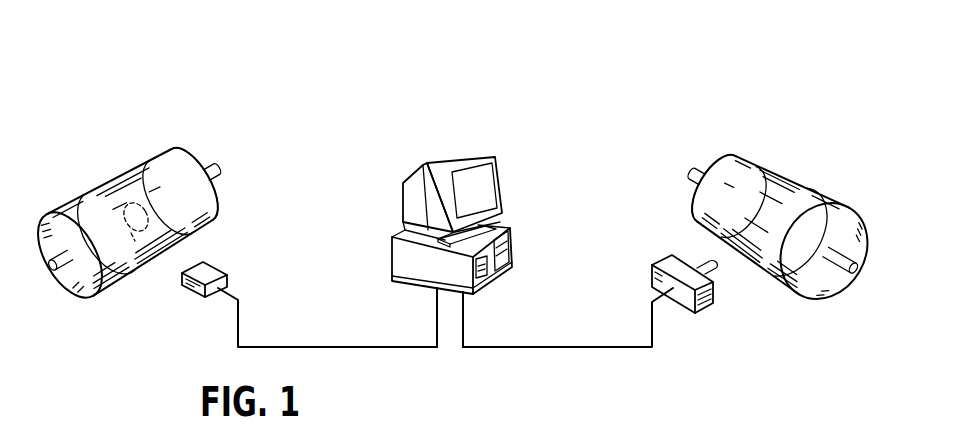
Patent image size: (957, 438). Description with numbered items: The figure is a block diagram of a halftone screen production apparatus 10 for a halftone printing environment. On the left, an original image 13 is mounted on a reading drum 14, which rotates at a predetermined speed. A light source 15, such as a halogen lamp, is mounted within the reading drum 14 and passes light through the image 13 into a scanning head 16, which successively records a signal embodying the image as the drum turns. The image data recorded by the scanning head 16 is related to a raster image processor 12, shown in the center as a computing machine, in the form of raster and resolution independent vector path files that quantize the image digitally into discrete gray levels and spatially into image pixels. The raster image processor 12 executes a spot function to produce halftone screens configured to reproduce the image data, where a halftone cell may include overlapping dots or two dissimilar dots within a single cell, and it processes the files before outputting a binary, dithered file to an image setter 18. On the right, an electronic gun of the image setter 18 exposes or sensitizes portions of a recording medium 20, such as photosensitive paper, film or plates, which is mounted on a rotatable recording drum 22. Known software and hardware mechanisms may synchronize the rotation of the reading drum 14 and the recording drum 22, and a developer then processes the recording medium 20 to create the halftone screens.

The halftone screen production apparatus 10 is at (226, 55).
The raster image processor 12 is at (394, 172).
The original image 13 is at (110, 196).
The reading drum 14 is at (177, 153).
The light source 15 is at (136, 201).
The scanning head 16 is at (216, 271).
The image setter 18 is at (665, 262).
The recording medium 20 is at (776, 190).
The recording drum 22 is at (730, 160).